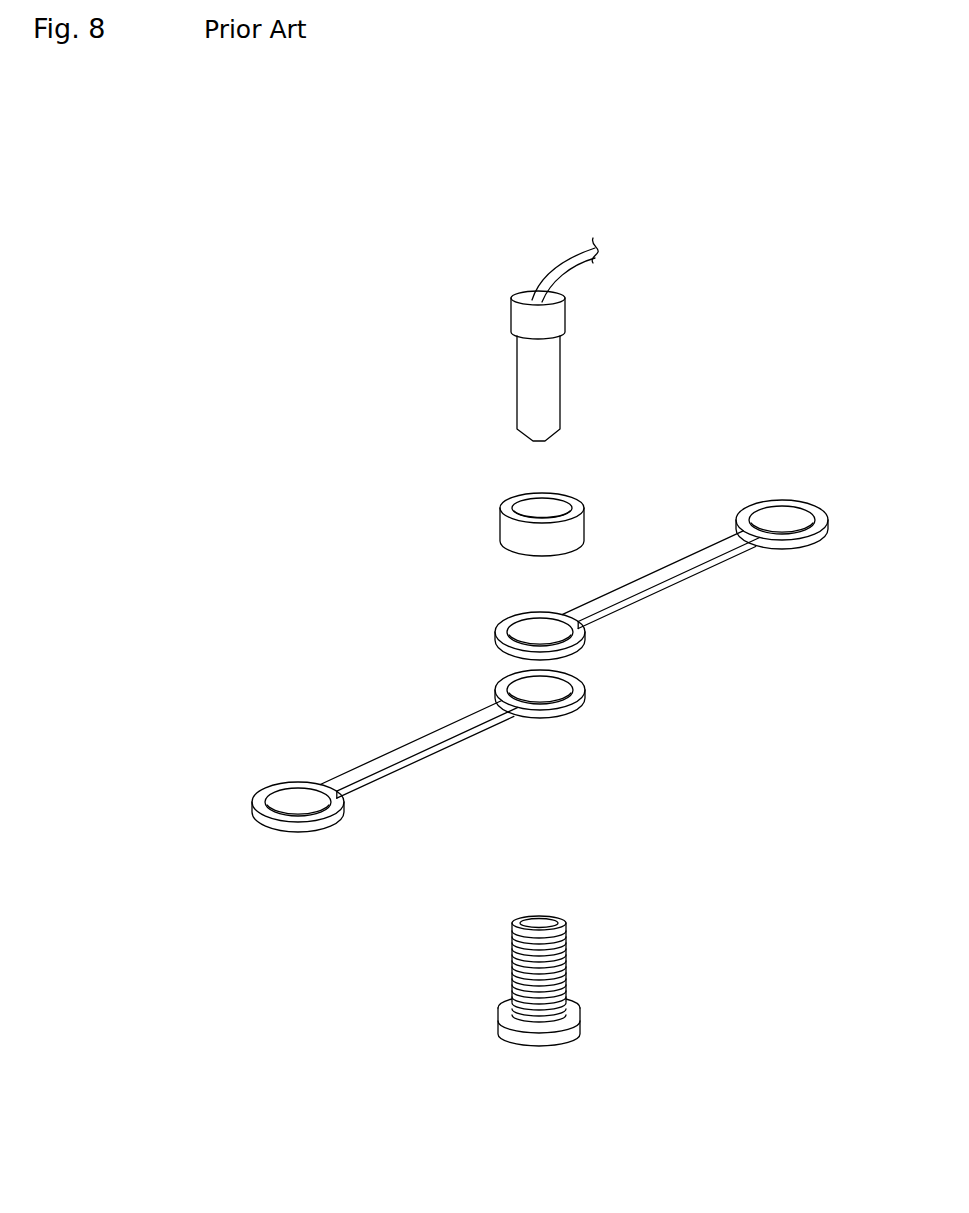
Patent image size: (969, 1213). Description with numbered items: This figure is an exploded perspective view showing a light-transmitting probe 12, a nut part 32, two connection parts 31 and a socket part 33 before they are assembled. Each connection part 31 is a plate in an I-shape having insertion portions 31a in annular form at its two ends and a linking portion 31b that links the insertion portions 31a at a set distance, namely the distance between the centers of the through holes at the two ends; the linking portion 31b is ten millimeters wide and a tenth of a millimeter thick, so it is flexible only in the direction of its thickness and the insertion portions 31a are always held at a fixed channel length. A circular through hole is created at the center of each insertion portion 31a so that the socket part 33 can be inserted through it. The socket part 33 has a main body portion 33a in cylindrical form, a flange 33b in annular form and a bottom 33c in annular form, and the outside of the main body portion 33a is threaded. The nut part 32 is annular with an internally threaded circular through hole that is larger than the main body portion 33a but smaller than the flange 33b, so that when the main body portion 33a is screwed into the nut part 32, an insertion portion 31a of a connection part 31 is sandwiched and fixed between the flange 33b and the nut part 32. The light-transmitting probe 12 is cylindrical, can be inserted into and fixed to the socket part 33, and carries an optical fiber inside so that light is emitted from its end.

The light-transmitting probe 12 is at (535, 367).
The nut part 32 is at (500, 525).
The connection part 31 is at (510, 666).
The insertion portion 31a is at (493, 690).
The linking portion 31b is at (417, 738).
The socket part 33 is at (402, 982).
The main body portion 33a is at (512, 962).
The flange 33b is at (502, 1018).
The bottom 33c is at (500, 1038).